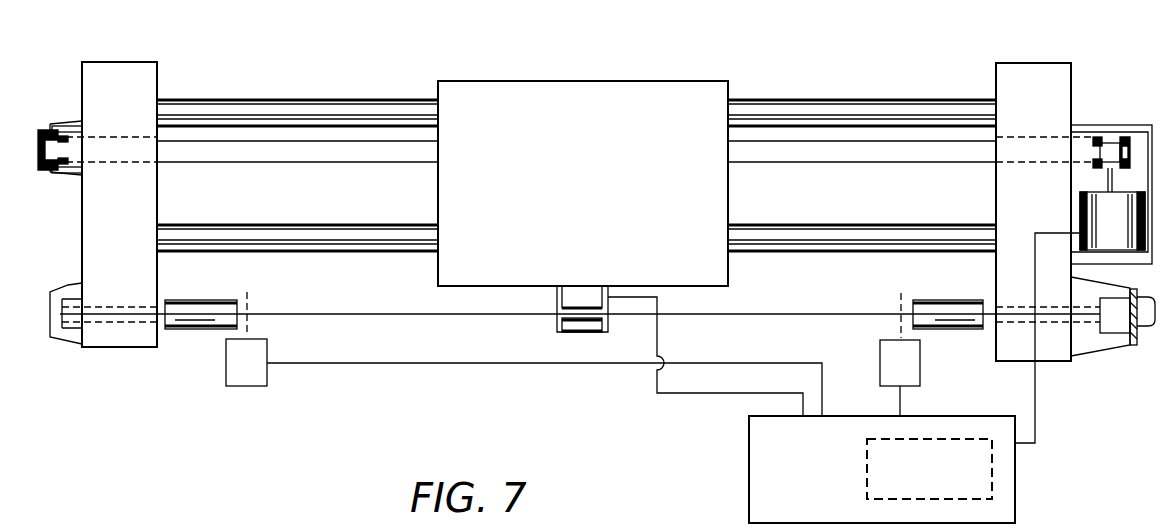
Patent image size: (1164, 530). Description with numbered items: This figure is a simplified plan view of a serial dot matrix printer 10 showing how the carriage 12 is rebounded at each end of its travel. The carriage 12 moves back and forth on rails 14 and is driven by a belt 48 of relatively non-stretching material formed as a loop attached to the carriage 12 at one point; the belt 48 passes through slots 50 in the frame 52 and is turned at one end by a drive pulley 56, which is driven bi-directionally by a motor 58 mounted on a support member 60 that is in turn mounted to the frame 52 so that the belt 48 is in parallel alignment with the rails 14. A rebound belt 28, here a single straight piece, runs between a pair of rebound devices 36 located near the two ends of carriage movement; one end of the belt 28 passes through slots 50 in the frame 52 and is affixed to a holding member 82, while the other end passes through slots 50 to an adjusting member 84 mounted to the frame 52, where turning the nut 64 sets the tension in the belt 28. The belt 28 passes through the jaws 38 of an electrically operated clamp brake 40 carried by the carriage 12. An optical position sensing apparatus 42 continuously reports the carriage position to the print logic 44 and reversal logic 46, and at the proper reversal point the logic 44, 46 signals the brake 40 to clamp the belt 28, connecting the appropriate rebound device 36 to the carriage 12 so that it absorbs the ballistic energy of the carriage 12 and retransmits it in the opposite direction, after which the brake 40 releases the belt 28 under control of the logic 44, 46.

The printer 10 is at (756, 55).
The carriage 12 is at (497, 97).
The rails 14 is at (290, 110).
The belt 28 is at (358, 318).
The rebound devices 36 is at (197, 320).
The jaws 38 is at (572, 302).
The clamp brake 40 is at (555, 298).
The optical position sensing apparatus 42 is at (257, 375).
The print logic 44 is at (755, 510).
The reversal logic 46 is at (938, 440).
The belt 48 is at (335, 150).
The slots 50 is at (133, 137).
The frame 52 is at (150, 78).
The drive pulley 56 is at (1110, 173).
The motor 58 is at (1103, 207).
The support member 60 is at (1107, 130).
The nut 64 is at (1143, 338).
The holding member 82 is at (68, 285).
The adjusting member 84 is at (1087, 372).